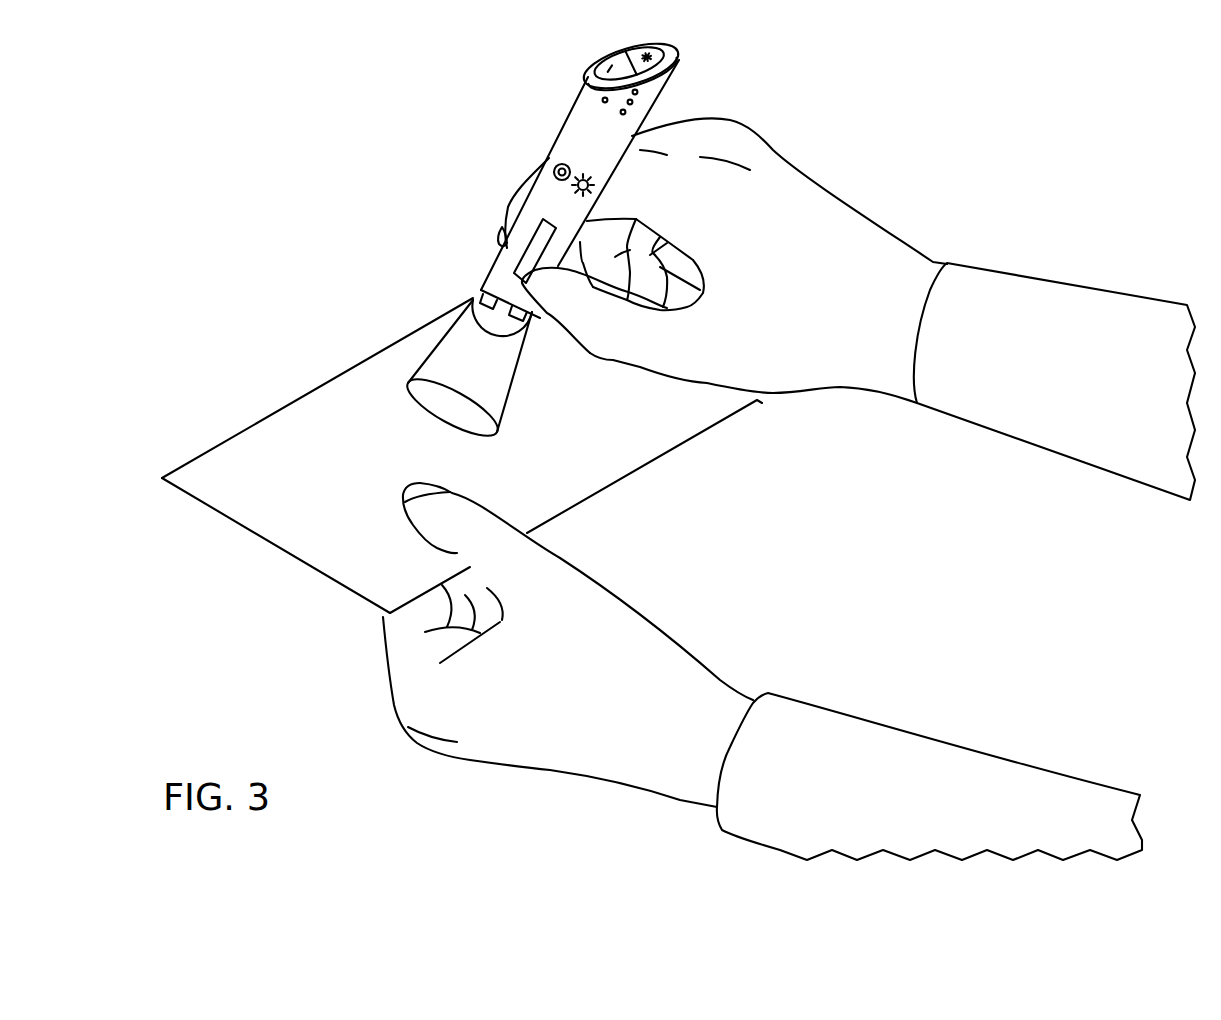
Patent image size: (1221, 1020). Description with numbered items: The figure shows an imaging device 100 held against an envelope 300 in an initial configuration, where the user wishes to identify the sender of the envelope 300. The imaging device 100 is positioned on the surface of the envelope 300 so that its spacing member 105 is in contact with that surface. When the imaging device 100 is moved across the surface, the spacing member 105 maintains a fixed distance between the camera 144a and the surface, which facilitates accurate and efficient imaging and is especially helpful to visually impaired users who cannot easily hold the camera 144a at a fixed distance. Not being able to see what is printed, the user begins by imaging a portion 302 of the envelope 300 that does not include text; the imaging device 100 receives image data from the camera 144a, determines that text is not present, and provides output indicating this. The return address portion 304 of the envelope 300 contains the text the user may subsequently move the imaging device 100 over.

The imaging device 100 is at (543, 108).
The camera 144a is at (482, 294).
The spacing member 105 is at (521, 364).
The envelope 300 is at (232, 543).
The portion 302 is at (398, 376).
The return address portion 304 is at (293, 477).